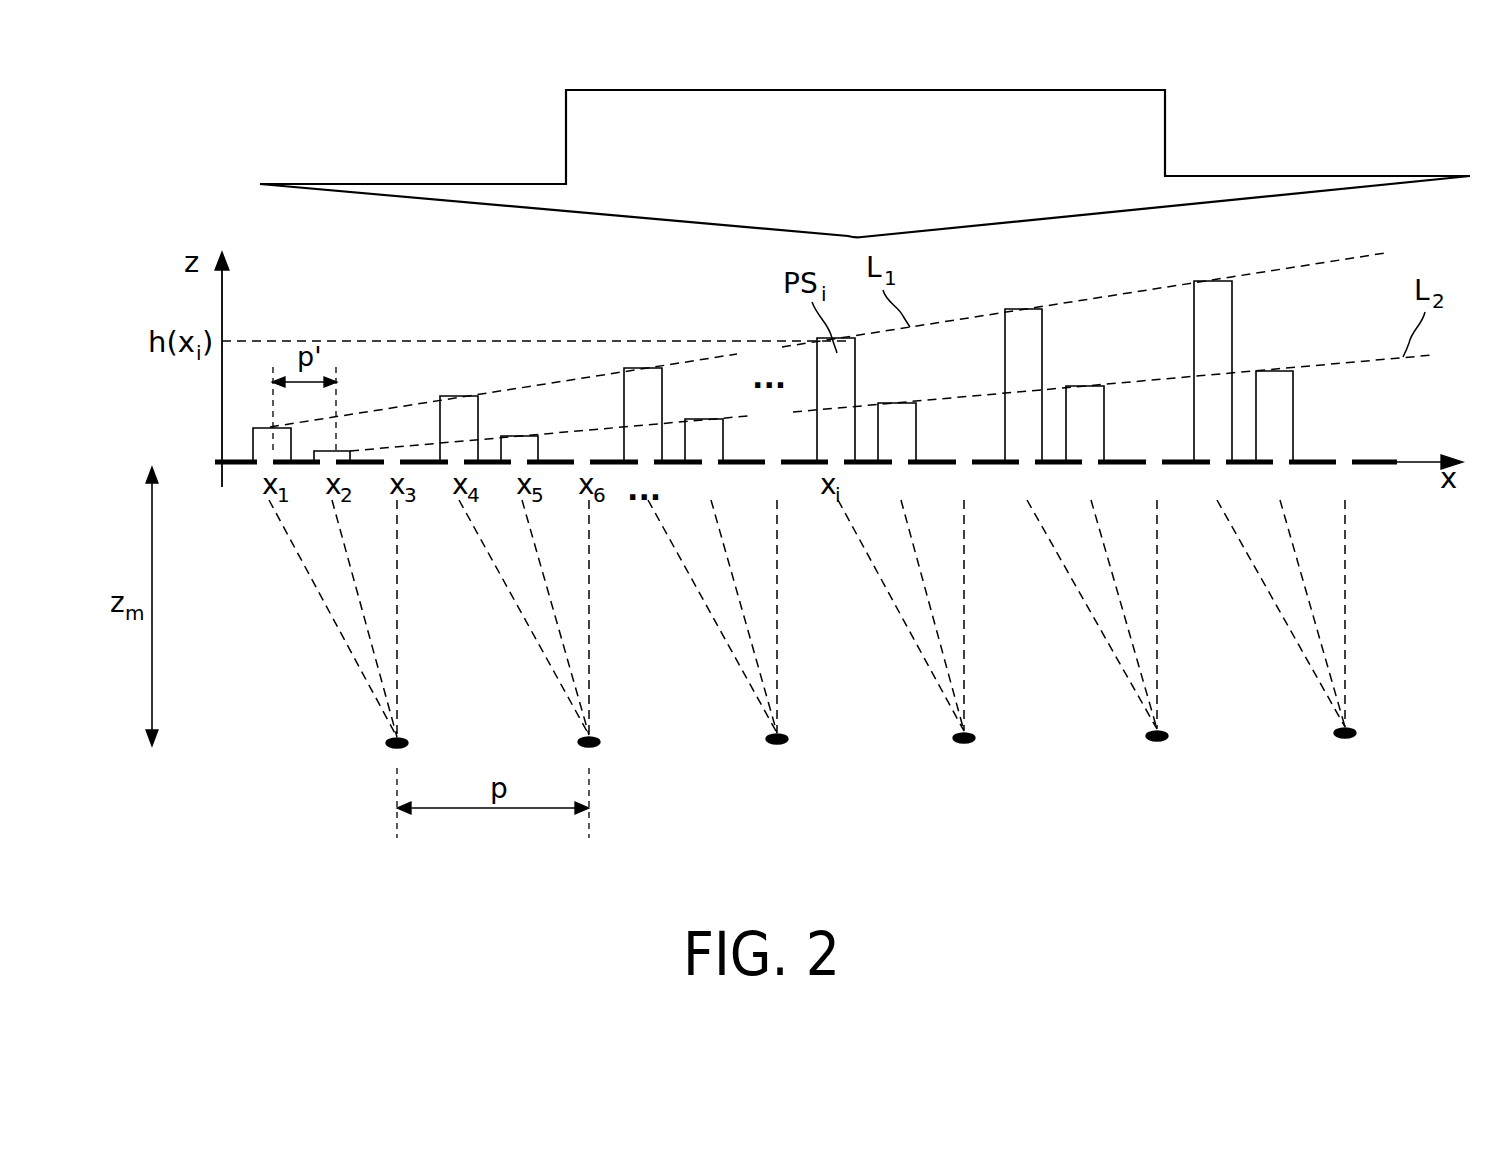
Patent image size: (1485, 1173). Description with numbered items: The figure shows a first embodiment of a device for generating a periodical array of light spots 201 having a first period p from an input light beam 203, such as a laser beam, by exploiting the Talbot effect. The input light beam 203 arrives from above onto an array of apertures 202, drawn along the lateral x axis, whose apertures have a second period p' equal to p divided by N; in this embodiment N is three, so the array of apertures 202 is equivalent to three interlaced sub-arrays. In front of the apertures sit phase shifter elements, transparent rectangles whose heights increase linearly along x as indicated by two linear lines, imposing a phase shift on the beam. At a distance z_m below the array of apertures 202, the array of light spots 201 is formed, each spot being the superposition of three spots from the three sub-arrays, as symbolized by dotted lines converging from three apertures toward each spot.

The periodical array of light spots 201 is at (382, 742).
The array of apertures 202 is at (214, 461).
The input light beam 203 is at (333, 192).